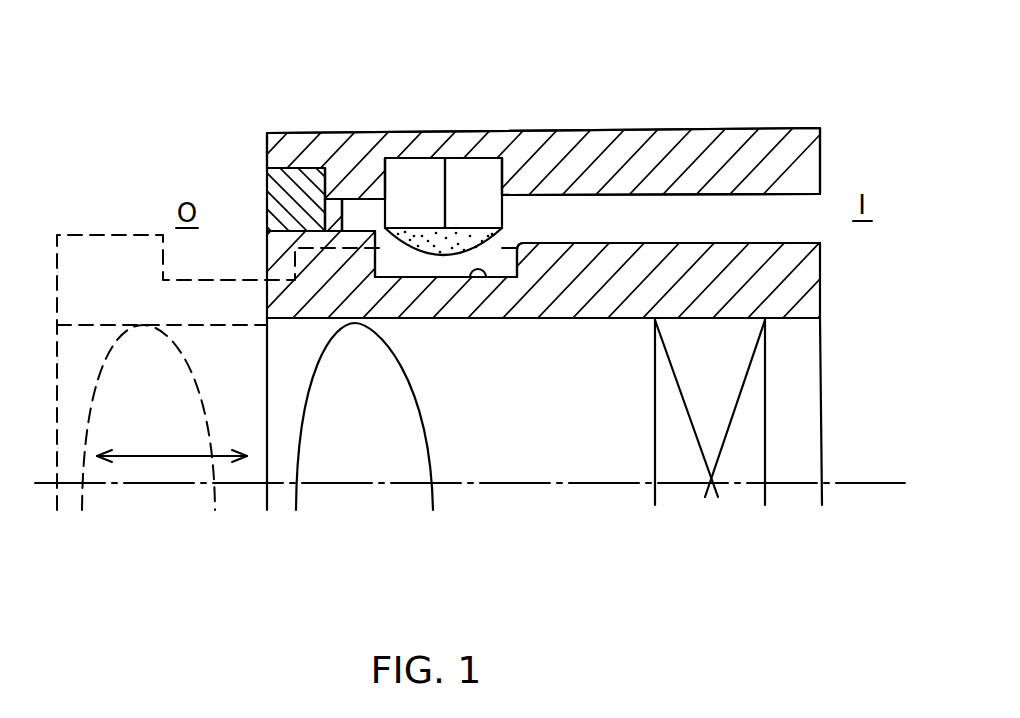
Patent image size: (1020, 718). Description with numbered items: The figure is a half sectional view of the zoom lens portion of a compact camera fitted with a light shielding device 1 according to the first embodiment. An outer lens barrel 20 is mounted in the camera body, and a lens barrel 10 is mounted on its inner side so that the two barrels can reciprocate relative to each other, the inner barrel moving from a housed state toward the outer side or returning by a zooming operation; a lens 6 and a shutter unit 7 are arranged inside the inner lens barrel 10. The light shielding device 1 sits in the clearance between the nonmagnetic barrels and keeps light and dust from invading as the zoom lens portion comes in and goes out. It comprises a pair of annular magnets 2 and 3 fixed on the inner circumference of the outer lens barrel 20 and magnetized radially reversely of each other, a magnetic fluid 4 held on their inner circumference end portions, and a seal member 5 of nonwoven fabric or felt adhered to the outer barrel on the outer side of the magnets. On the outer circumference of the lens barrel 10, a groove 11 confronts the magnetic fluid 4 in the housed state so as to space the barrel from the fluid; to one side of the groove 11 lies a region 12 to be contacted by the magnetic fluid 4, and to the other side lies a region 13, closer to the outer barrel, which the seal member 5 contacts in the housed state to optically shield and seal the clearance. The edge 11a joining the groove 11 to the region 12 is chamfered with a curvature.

The light shielding device 1 is at (431, 114).
The annular magnet 2 is at (393, 163).
The annular magnet 3 is at (485, 163).
The magnetic fluid 4 is at (513, 248).
The seal member 5 is at (268, 195).
The lens 6 is at (345, 465).
The shutter unit 7 is at (745, 462).
The lens barrel 10 is at (768, 283).
The groove 11 is at (486, 270).
The edge 11a is at (517, 246).
The region 12 is at (656, 243).
The region 13 is at (340, 203).
The outer lens barrel 20 is at (608, 138).